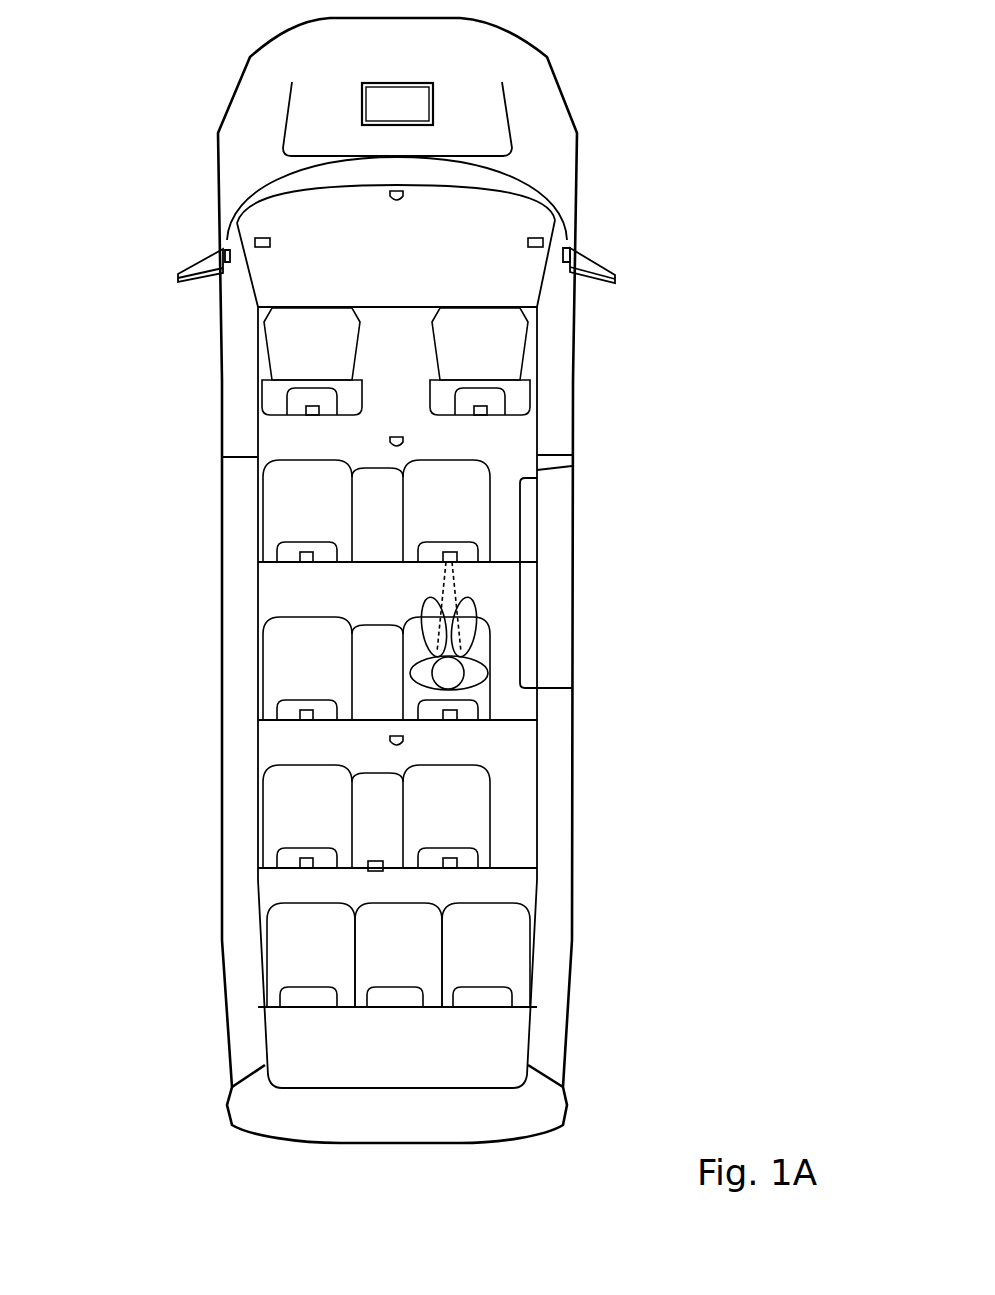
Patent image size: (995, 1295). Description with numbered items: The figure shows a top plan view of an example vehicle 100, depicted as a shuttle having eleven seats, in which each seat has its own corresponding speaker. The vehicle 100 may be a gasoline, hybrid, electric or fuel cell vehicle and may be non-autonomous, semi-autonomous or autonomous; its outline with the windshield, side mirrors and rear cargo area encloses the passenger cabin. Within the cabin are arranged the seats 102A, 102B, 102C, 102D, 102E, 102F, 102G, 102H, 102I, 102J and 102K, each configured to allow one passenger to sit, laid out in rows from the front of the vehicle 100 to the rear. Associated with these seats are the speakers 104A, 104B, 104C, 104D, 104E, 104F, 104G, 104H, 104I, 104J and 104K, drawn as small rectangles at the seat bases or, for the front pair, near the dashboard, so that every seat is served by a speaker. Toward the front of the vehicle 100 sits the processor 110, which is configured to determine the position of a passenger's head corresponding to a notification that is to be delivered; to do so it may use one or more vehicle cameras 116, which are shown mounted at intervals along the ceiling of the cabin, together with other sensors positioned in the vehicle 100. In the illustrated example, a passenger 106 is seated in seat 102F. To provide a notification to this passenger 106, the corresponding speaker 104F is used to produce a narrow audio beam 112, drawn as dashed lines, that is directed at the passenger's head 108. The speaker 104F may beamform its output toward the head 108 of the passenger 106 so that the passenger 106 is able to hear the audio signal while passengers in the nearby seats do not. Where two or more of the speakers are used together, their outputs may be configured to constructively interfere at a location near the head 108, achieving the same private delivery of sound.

The vehicle 100 is at (253, 58).
The seat 102A is at (338, 363).
The seat 102B is at (506, 363).
The seat 102C is at (337, 520).
The seat 102D is at (473, 508).
The seat 102E is at (339, 680).
The seat 102F is at (492, 650).
The seat 102G is at (337, 832).
The seat 102H is at (477, 827).
The seat 102I is at (330, 967).
The seat 102J is at (420, 967).
The seat 102K is at (517, 967).
The speaker 104A is at (255, 243).
The speaker 104B is at (543, 243).
The speaker 104C is at (306, 411).
The speaker 104D is at (488, 411).
The speaker 104E is at (300, 557).
The speaker 104F is at (457, 557).
The speaker 104G is at (300, 715).
The speaker 104H is at (460, 721).
The speaker 104I is at (300, 866).
The speaker 104J is at (368, 868).
The speaker 104K is at (457, 866).
The passenger 106 is at (488, 676).
The head 108 is at (465, 682).
The processor 110 is at (414, 116).
The narrow audio beam 112 is at (470, 600).
The vehicle camera 116 is at (401, 190).